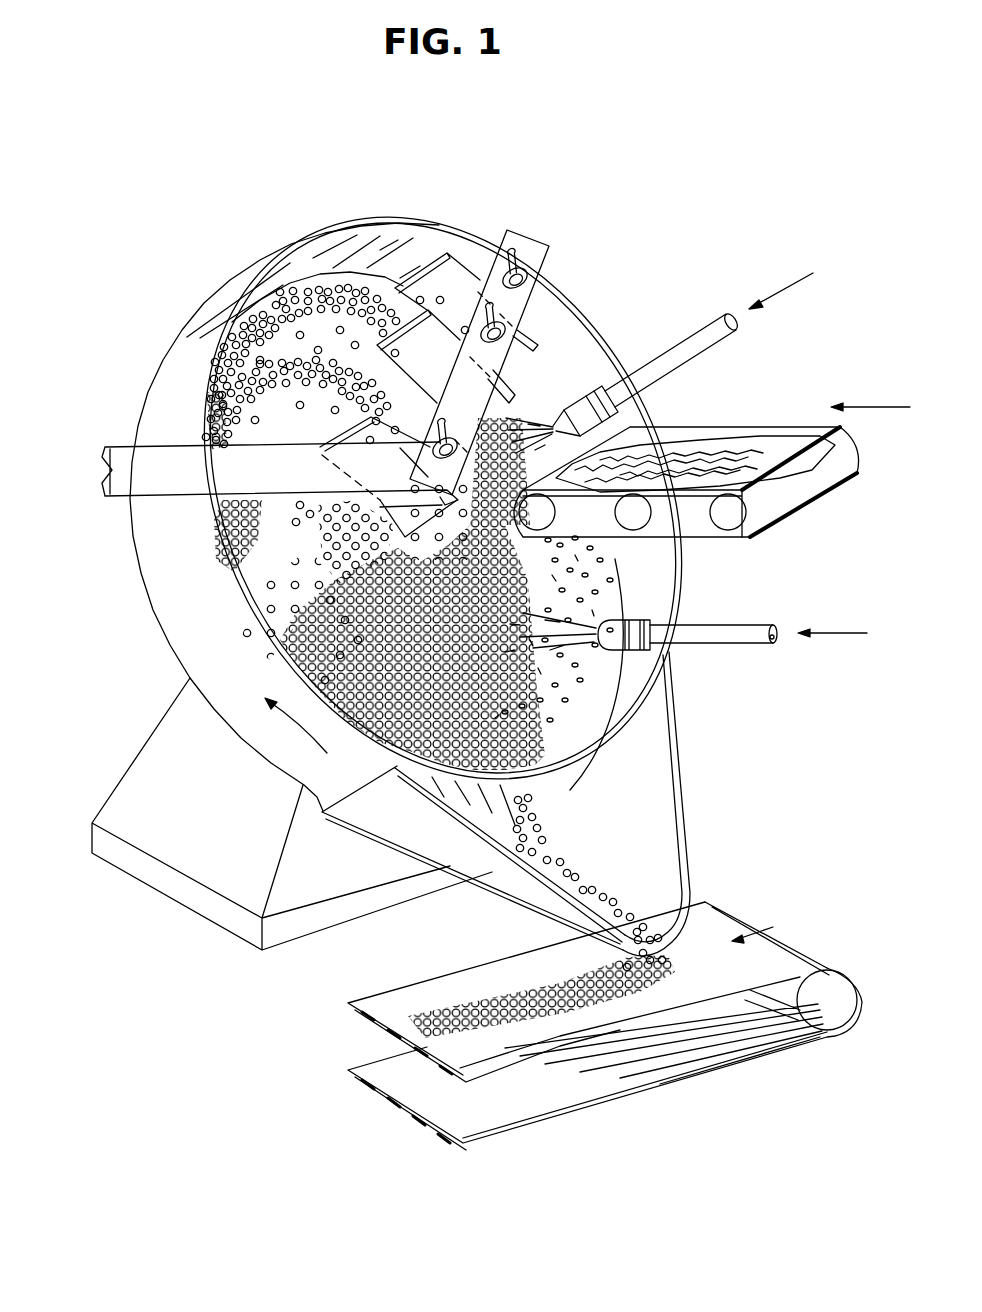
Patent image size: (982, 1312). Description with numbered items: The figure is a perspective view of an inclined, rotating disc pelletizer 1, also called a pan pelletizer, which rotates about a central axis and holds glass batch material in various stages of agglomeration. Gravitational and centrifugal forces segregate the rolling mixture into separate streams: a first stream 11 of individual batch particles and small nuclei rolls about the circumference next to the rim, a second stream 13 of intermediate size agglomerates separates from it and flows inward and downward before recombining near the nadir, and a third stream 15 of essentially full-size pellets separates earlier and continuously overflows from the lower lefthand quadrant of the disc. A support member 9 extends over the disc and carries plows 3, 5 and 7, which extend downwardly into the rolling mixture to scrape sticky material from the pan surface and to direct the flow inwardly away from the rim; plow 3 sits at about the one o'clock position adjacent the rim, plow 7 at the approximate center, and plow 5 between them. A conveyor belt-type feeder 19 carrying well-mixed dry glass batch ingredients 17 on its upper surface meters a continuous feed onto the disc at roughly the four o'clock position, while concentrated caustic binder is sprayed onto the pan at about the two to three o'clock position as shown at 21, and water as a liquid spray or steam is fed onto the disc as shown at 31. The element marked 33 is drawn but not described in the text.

The disc pelletizer 1 is at (302, 562).
The plow 3 is at (458, 302).
The plow 5 is at (432, 364).
The plow 7 is at (424, 505).
The support member 9 is at (122, 470).
The first stream 11 is at (290, 290).
The second stream 13 is at (256, 370).
The third stream 15 is at (302, 496).
The dry glass batch ingredients 17 is at (717, 443).
The conveyor belt-type feeder 19 is at (683, 432).
The caustic spray 21 is at (710, 343).
The water spray 31 is at (743, 627).
The discharge chute 33 is at (702, 806).